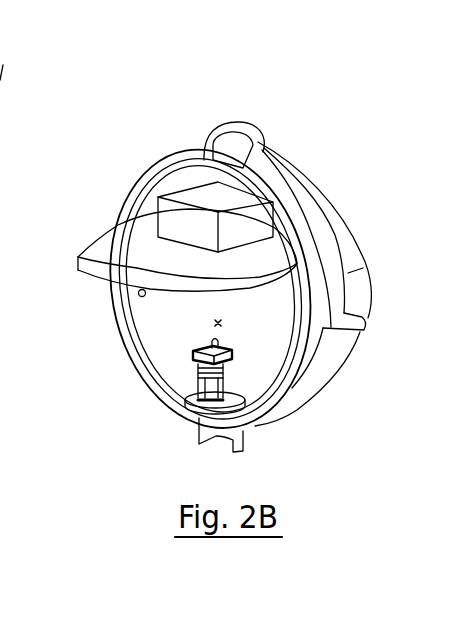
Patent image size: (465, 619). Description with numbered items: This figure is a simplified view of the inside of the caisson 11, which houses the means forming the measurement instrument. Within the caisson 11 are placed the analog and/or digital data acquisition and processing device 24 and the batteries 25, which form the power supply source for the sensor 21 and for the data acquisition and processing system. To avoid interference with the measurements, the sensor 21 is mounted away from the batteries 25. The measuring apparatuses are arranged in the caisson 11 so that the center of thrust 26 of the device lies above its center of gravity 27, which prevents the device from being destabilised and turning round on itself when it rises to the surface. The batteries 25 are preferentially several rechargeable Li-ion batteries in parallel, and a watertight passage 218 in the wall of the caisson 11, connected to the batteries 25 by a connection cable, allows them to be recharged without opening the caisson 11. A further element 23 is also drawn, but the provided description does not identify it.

The caisson 11 is at (310, 198).
The sensor 21 is at (0, 262).
The watertight passage 218 is at (139, 294).
The support arm 23 is at (9, 59).
The data acquisition and processing device 24 is at (128, 244).
The batteries 25 is at (178, 207).
The center of thrust 26 is at (193, 355).
The center of gravity 27 is at (222, 323).